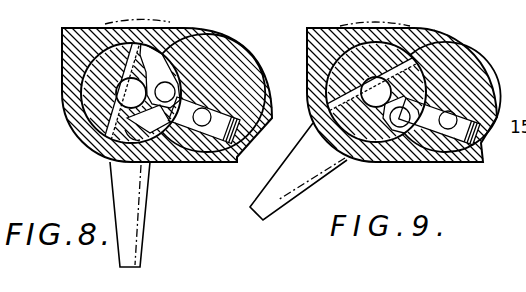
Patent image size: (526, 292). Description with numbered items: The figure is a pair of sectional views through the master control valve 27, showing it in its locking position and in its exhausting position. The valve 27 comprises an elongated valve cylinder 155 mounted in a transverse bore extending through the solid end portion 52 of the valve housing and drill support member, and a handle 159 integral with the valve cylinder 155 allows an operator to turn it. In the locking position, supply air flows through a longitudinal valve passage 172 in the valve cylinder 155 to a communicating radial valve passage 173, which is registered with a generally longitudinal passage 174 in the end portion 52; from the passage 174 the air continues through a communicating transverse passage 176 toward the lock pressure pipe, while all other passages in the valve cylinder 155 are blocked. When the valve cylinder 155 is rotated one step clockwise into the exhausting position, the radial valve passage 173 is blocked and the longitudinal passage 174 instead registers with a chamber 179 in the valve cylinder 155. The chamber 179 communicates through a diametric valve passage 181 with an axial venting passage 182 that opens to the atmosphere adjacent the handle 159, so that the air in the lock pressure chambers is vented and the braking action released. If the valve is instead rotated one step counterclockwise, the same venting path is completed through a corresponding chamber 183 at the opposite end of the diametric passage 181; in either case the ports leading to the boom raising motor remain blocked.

In FIG. 8, the master control valve 27 is at (77, 140).
In FIG. 9, the master control valve 27 is at (375, 164).
In FIG. 8, the solid end portion of the valve housing 52 is at (241, 60).
In FIG. 9, the solid end portion of the valve housing 52 is at (474, 77).
In FIG. 8, the valve cylinder 155 is at (93, 62).
In FIG. 9, the valve cylinder 155 is at (393, 53).
In FIG. 8, the handle 159 is at (137, 205).
In FIG. 9, the handle 159 is at (282, 198).
In FIG. 8, the longitudinal valve passage 172 is at (239, 26).
In FIG. 9, the longitudinal valve passage 172 is at (426, 153).
In FIG. 8, the radial valve passage 173 is at (163, 158).
In FIG. 9, the radial valve passage 173 is at (398, 162).
In FIG. 8, the longitudinal passage 174 is at (189, 162).
In FIG. 9, the longitudinal passage 174 is at (486, 133).
In FIG. 8, the transverse passage 176 is at (256, 92).
In FIG. 9, the transverse passage 176 is at (465, 153).
In FIG. 8, the chamber 179 is at (158, 58).
In FIG. 9, the chamber 179 is at (421, 87).
In FIG. 8, the diametric valve passage 181 is at (118, 114).
In FIG. 9, the diametric valve passage 181 is at (372, 101).
In FIG. 8, the axial venting passage 182 is at (117, 81).
In FIG. 9, the axial venting passage 182 is at (366, 88).
In FIG. 8, the chamber 183 is at (102, 151).
In FIG. 9, the chamber 183 is at (343, 157).